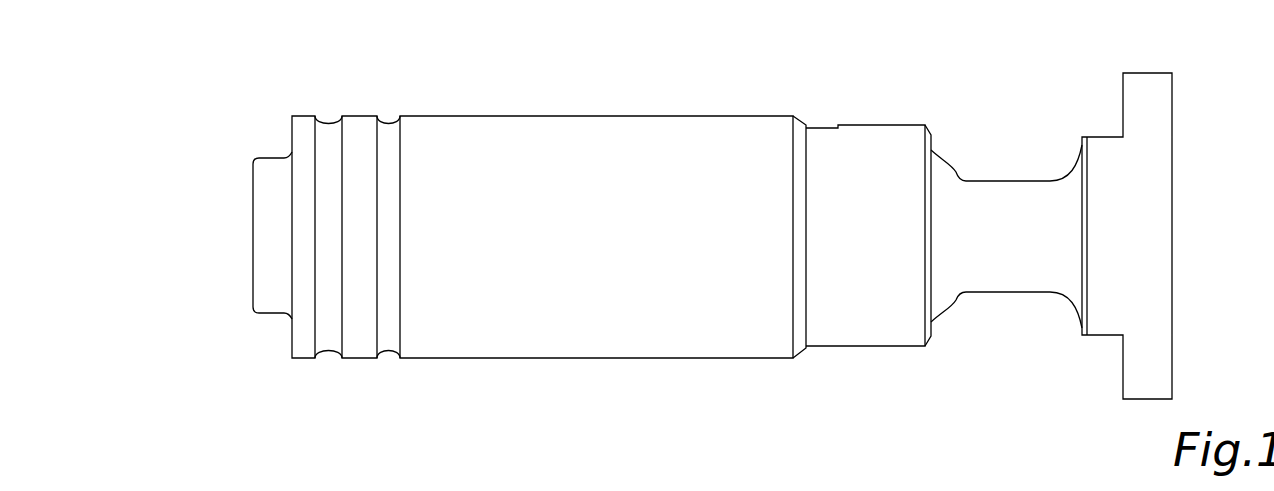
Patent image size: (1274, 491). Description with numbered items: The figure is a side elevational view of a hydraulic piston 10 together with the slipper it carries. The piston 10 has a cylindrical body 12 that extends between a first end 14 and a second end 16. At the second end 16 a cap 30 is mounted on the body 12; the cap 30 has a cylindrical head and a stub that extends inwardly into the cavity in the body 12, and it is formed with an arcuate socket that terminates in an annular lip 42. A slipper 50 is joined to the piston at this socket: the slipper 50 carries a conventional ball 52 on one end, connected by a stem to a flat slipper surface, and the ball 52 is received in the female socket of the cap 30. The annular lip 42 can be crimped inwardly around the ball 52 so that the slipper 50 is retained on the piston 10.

The hydraulic piston 10 is at (284, 84).
The cylindrical body 12 is at (620, 115).
The first end 14 is at (258, 218).
The second end 16 is at (808, 241).
The cap 30 is at (885, 123).
The annular lip 42 is at (932, 138).
The slipper 50 is at (1175, 108).
The ball 52 is at (940, 315).